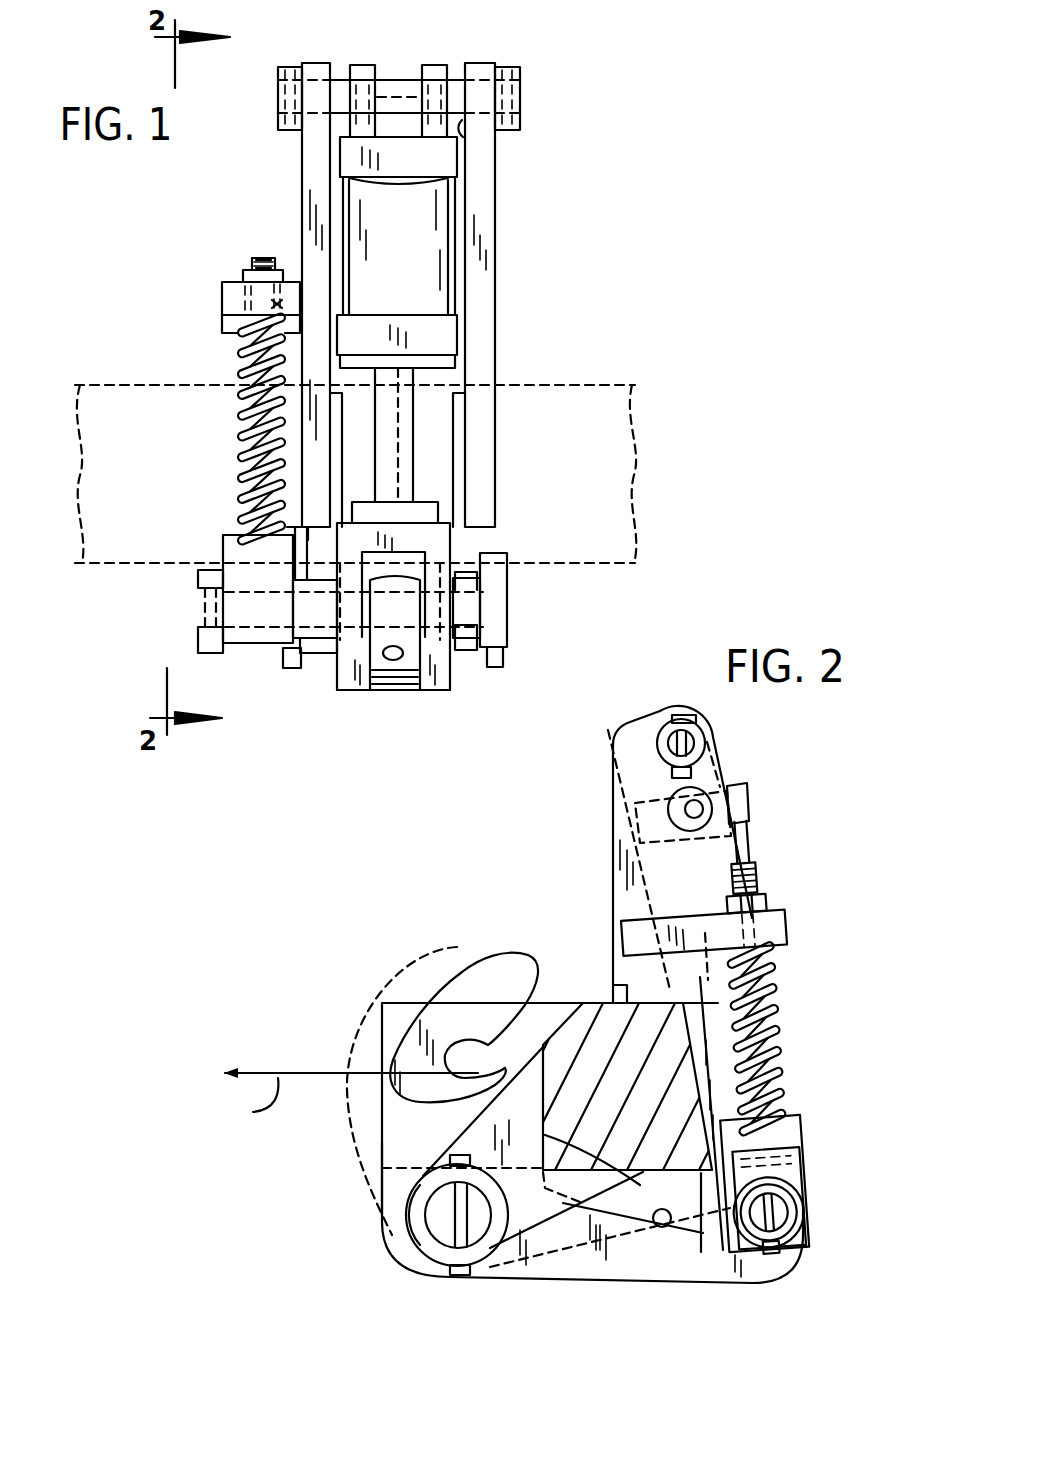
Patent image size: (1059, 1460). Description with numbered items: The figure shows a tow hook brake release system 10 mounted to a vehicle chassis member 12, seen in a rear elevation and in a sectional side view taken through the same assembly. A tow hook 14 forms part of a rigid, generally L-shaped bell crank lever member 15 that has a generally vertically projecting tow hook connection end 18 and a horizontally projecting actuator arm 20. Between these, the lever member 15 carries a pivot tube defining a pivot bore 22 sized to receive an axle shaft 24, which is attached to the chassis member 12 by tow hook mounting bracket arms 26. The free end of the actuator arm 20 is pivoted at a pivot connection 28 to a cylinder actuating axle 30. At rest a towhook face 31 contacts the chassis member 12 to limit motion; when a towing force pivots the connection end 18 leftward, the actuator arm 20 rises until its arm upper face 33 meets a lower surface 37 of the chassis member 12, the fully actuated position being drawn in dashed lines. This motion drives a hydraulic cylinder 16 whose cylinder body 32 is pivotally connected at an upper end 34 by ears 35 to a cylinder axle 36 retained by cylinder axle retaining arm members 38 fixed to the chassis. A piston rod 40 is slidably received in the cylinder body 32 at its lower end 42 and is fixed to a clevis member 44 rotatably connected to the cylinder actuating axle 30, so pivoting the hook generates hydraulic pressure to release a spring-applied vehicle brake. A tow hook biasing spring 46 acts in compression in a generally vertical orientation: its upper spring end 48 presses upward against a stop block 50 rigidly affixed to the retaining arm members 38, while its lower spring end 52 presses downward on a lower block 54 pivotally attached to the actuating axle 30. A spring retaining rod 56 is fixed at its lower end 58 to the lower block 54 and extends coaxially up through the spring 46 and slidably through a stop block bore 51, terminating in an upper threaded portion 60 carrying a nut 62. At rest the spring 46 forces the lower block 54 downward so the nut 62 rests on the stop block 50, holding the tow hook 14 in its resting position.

In FIG. 2, the tow hook brake release system 10 is at (845, 878).
In FIG. 1, the vehicle chassis member 12 is at (579, 384).
In FIG. 2, the vehicle chassis member 12 is at (593, 1015).
In FIG. 2, the tow hook 14 is at (455, 1050).
In FIG. 1, the bell crank lever member 15 is at (382, 704).
In FIG. 2, the bell crank lever member 15 is at (376, 1144).
In FIG. 1, the hydraulic cylinder 16 is at (462, 258).
In FIG. 2, the hydraulic cylinder 16 is at (758, 836).
In FIG. 2, the tow hook connection end 18 is at (397, 1040).
In FIG. 1, the actuator arm 20 is at (371, 690).
In FIG. 2, the actuator arm 20 is at (647, 1272).
In FIG. 2, the pivot bore 22 is at (440, 1235).
In FIG. 2, the axle shaft 24 is at (480, 1230).
In FIG. 1, the tow hook mounting bracket arms 26 is at (320, 655).
In FIG. 2, the tow hook mounting bracket arms 26 is at (468, 1142).
In FIG. 1, the pivot connection 28 is at (405, 672).
In FIG. 2, the pivot connection 28 is at (800, 1210).
In FIG. 1, the cylinder actuating axle 30 is at (286, 635).
In FIG. 2, the cylinder actuating axle 30 is at (785, 1218).
In FIG. 2, the towhook face 31 is at (613, 1170).
In FIG. 1, the cylinder body 32 is at (445, 228).
In FIG. 2, the arm upper face 33 is at (672, 1228).
In FIG. 1, the upper end 34 is at (462, 123).
In FIG. 2, the upper end 34 is at (737, 784).
In FIG. 1, the ears 35 is at (357, 66).
In FIG. 2, the ears 35 is at (628, 742).
In FIG. 1, the cylinder axle 36 is at (384, 78).
In FIG. 2, the cylinder axle 36 is at (697, 745).
In FIG. 2, the lower surface 37 is at (720, 1105).
In FIG. 1, the cylinder axle retaining arm members 38 is at (302, 170).
In FIG. 2, the cylinder axle retaining arm members 38 is at (612, 825).
In FIG. 1, the piston rod 40 is at (420, 439).
In FIG. 1, the lower end 42 is at (442, 367).
In FIG. 2, the lower end 42 is at (775, 950).
In FIG. 1, the clevis member 44 is at (445, 542).
In FIG. 1, the tow hook biasing spring 46 is at (230, 364).
In FIG. 2, the tow hook biasing spring 46 is at (786, 1066).
In FIG. 1, the upper spring end 48 is at (232, 333).
In FIG. 1, the stop block 50 is at (224, 300).
In FIG. 2, the stop block 50 is at (790, 928).
In FIG. 1, the stop block bore 51 is at (283, 303).
In FIG. 2, the stop block bore 51 is at (786, 928).
In FIG. 1, the lower spring end 52 is at (240, 508).
In FIG. 2, the lower spring end 52 is at (787, 1120).
In FIG. 1, the lower block 54 is at (222, 550).
In FIG. 1, the spring retaining rod 56 is at (252, 256).
In FIG. 2, the spring retaining rod 56 is at (758, 868).
In FIG. 1, the lower end 58 is at (236, 546).
In FIG. 1, the upper threaded portion 60 is at (278, 260).
In FIG. 2, the upper threaded portion 60 is at (727, 878).
In FIG. 1, the nut 62 is at (243, 277).
In FIG. 2, the nut 62 is at (758, 898).